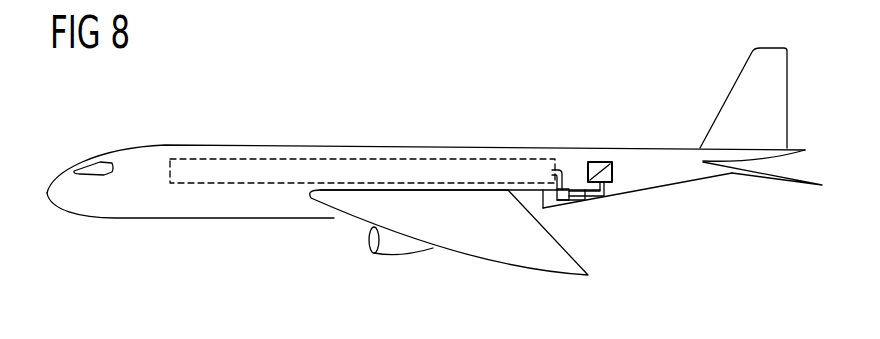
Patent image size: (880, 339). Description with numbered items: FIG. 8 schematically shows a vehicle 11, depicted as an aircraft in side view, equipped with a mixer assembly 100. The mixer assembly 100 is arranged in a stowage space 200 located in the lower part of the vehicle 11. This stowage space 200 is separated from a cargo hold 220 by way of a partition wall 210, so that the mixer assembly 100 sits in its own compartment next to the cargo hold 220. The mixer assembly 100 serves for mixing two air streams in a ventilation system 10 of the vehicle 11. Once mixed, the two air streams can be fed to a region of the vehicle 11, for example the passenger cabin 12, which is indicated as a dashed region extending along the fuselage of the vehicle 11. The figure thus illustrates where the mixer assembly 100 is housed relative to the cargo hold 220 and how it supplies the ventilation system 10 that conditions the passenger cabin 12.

The ventilation system 10 is at (434, 170).
The vehicle 11 is at (660, 158).
The passenger cabin 12 is at (357, 163).
The mixer assembly 100 is at (578, 143).
The stowage space 200 is at (553, 204).
The partition wall 210 is at (532, 165).
The cargo hold 220 is at (530, 201).